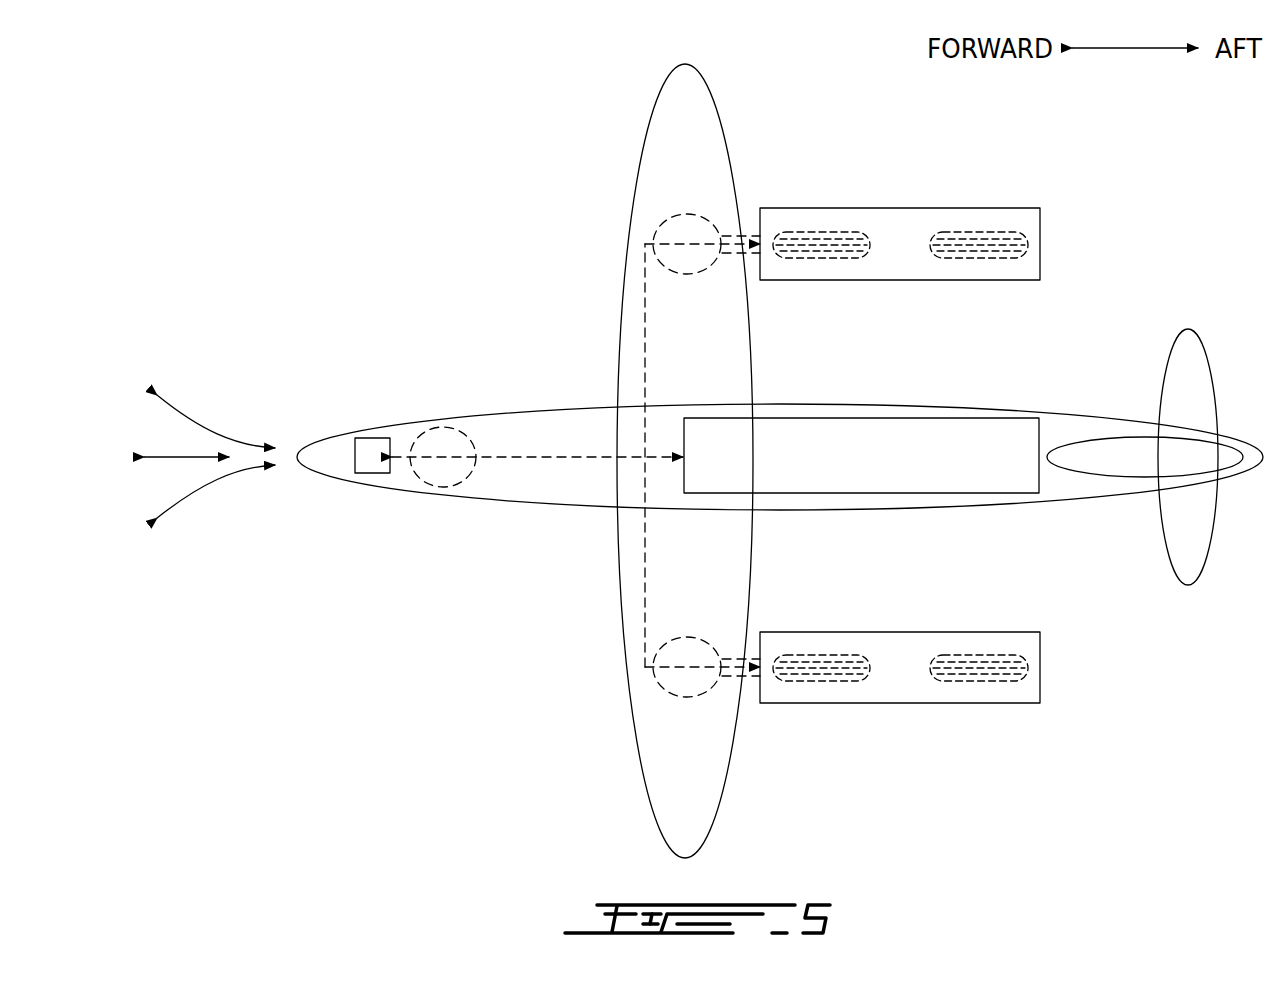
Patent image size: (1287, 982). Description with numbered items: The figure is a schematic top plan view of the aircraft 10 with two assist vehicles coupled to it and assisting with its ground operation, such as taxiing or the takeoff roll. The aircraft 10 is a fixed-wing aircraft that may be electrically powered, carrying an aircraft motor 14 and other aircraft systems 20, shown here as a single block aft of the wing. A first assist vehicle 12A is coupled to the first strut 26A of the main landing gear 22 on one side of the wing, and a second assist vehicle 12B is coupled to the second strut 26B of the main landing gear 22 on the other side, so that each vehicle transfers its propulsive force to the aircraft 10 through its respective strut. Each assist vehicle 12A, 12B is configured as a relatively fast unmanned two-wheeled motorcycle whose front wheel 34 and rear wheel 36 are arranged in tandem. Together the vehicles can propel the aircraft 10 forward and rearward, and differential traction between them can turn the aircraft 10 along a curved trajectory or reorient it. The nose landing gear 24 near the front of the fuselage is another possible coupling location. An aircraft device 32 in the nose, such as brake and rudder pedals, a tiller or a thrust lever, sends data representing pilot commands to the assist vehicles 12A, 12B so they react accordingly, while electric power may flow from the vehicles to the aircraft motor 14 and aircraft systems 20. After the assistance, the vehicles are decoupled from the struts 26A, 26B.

The aircraft 10 is at (432, 318).
The first assist vehicle 12A is at (900, 208).
The second assist vehicle 12B is at (900, 632).
The aircraft motor 14 is at (861, 455).
The aircraft systems 20 is at (861, 455).
The main landing gear 22 is at (628, 470).
The nose landing gear 24 is at (418, 487).
The first strut 26A is at (660, 222).
The second strut 26B is at (667, 698).
The aircraft device 32 is at (355, 456).
The front wheel 34 is at (822, 258).
The rear wheel 36 is at (978, 258).